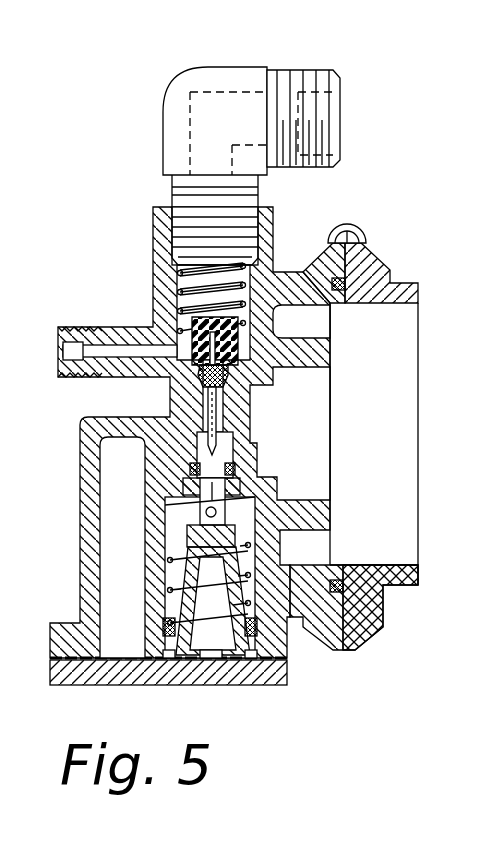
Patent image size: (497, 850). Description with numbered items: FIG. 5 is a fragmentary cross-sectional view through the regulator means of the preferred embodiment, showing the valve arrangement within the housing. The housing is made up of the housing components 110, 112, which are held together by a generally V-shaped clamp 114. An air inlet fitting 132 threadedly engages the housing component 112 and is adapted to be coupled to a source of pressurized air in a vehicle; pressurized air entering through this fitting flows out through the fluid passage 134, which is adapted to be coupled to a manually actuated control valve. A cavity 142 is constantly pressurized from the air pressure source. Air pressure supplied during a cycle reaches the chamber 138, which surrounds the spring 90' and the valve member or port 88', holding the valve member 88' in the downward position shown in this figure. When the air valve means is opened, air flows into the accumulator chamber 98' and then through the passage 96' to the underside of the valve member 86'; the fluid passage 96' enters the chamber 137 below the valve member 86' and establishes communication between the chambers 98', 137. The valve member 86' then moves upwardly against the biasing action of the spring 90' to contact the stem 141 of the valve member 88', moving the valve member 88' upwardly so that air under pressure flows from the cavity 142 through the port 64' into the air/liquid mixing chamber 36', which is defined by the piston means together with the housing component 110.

The air inlet fitting 132 is at (255, 73).
The cavity 142 is at (277, 260).
The housing component 112 is at (172, 300).
The fluid passage 134 is at (103, 345).
The valve member 88' is at (178, 362).
The stem 141 is at (216, 400).
The port 64' is at (286, 433).
The spring 90' is at (190, 432).
The accumulator chamber 98' is at (86, 547).
The chamber 138 is at (167, 512).
The valve member 86' is at (177, 559).
The fluid passage 96' is at (176, 631).
The chamber 137 is at (255, 652).
The housing component 110 is at (400, 288).
The V-shaped clamp 114 is at (372, 235).
The air/liquid mixing chamber 36' is at (371, 476).